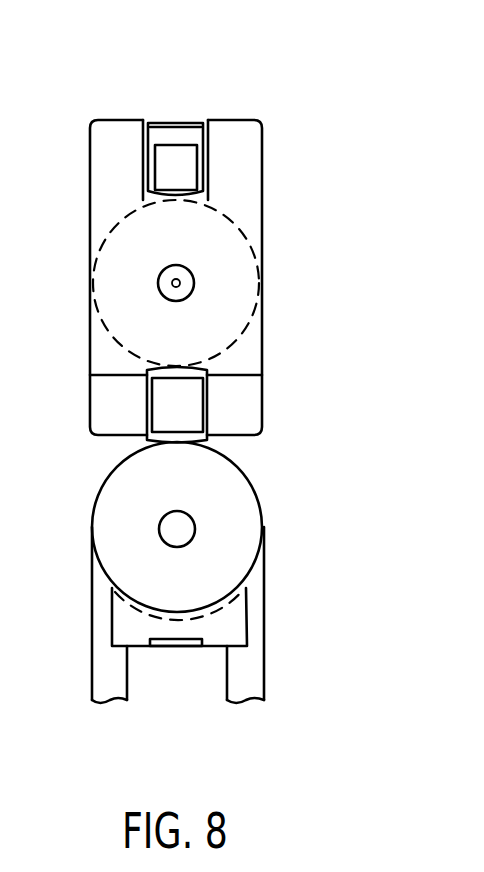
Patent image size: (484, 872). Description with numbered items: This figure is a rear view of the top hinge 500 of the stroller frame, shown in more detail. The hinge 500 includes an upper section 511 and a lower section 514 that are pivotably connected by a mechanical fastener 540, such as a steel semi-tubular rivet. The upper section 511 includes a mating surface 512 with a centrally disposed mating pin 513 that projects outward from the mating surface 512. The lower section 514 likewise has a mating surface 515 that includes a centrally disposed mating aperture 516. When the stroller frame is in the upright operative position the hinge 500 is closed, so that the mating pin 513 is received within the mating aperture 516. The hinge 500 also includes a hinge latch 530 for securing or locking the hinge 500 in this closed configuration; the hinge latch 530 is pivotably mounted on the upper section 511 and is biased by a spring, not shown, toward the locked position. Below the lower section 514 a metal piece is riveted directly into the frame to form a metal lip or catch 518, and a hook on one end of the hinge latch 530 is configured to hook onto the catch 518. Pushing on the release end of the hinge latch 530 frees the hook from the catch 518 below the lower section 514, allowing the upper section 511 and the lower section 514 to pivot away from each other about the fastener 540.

The hinge 500 is at (327, 70).
The upper section 511 is at (242, 168).
The mating surface 512 is at (248, 266).
The mating pin 513 is at (175, 282).
The lower section 514 is at (260, 606).
The mating surface 515 is at (245, 500).
The mating aperture 516 is at (160, 535).
The catch 518 is at (177, 647).
The hinge latch 530 is at (167, 123).
The mechanical fastener 540 is at (192, 412).